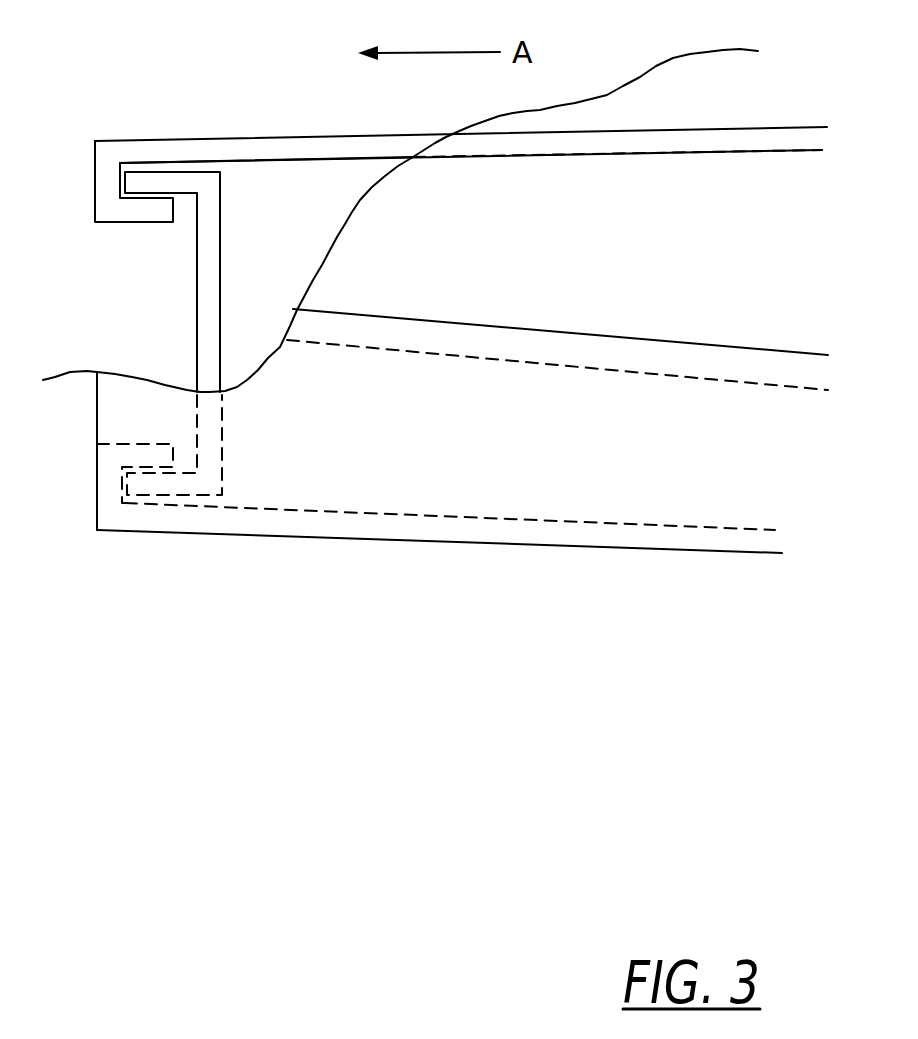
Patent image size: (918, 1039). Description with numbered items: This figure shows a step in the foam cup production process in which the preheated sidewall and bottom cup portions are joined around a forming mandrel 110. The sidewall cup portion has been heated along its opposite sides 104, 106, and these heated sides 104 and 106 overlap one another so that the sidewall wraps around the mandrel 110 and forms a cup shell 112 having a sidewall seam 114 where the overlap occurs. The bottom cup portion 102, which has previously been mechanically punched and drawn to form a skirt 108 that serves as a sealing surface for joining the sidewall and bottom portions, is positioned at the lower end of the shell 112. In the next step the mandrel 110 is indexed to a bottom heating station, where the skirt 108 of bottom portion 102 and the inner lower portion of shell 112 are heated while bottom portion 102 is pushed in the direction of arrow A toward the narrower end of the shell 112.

The bottom cup portion 102 is at (197, 333).
The side of sidewall cup portion 104 is at (511, 328).
The side of sidewall cup portion 106 is at (410, 352).
The skirt 108 is at (175, 110).
The forming mandrel 110 is at (302, 233).
The cup shell 112 is at (668, 582).
The sidewall seam 114 is at (793, 367).